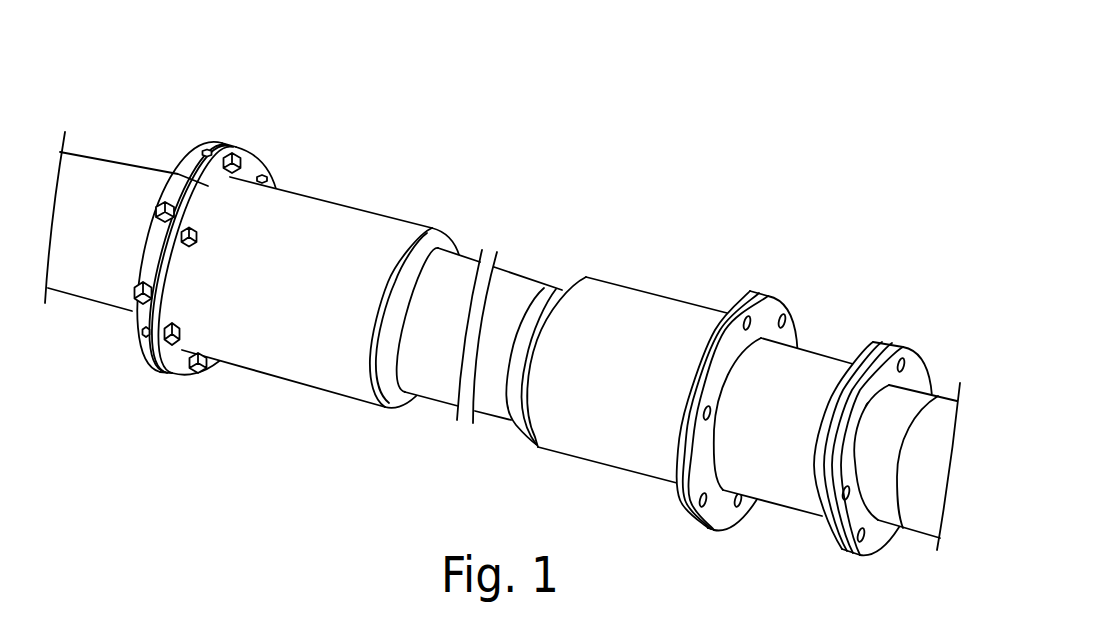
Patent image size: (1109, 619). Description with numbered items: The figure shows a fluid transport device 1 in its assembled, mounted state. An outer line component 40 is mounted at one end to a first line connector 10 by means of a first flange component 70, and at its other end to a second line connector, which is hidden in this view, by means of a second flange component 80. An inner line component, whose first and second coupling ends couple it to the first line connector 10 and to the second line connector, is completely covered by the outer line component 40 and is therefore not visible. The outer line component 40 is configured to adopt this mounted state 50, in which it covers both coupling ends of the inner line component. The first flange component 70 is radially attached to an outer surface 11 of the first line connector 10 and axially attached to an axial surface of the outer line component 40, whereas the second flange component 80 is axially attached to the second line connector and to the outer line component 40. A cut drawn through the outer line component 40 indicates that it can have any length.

The fluid transport device 1 is at (331, 124).
The first line connector 10 is at (105, 186).
The outer surface 11 is at (128, 318).
The outer line component 40 is at (404, 255).
The mounted state 50 is at (833, 192).
The first flange component 70 is at (195, 152).
The second flange component 80 is at (828, 338).